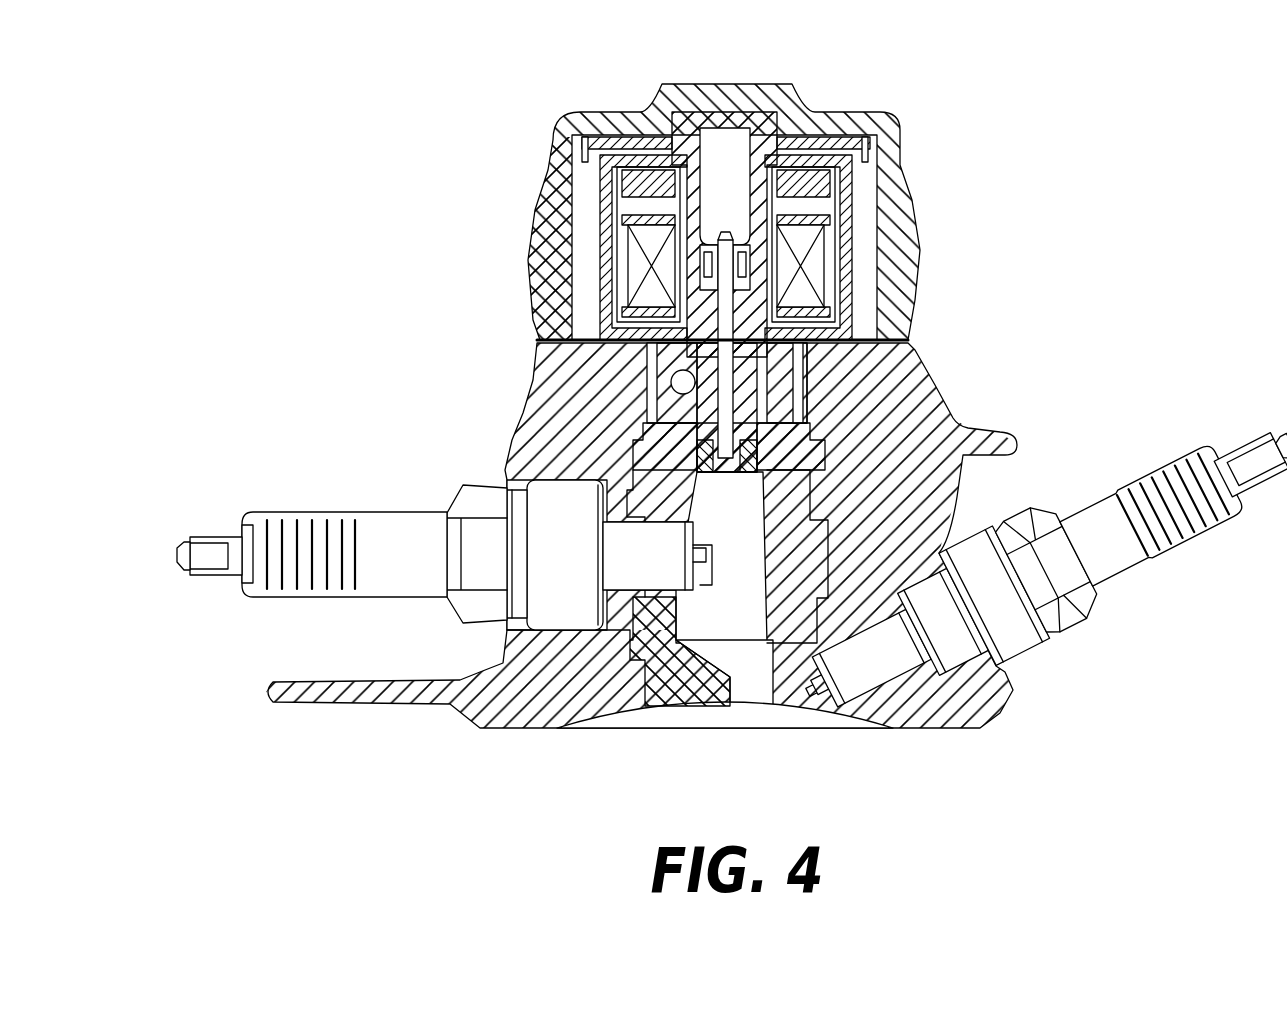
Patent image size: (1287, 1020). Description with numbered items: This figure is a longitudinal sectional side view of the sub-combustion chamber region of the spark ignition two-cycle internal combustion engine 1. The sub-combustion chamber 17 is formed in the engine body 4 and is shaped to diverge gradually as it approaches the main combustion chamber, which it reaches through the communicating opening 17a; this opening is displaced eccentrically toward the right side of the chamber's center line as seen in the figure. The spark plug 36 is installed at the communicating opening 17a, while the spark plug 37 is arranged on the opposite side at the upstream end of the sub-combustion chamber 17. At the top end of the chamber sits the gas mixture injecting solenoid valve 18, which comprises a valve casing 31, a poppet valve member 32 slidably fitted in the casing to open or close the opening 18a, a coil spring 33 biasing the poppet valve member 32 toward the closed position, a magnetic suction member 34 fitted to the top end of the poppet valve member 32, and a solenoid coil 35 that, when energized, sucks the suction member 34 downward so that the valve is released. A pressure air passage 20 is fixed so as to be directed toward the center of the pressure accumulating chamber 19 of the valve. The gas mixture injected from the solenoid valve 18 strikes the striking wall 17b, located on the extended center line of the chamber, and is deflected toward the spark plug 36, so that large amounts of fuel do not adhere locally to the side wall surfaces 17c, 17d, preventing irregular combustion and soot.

The internal combustion engine 1 is at (408, 291).
The cylinder head 4 is at (878, 418).
The sub-combustion chamber 17 is at (700, 628).
The communicating opening 17a is at (775, 682).
The striking wall 17b is at (670, 680).
The side wall surface 17c is at (624, 636).
The side wall surface 17d is at (724, 672).
The gas mixture injecting solenoid valve 18 is at (736, 294).
The opening 18a is at (753, 474).
The pressure accumulating chamber 19 is at (772, 318).
The pressure air passage 20 is at (680, 382).
The valve casing 31 is at (788, 381).
The poppet valve member 32 is at (697, 462).
The coil spring 33 is at (748, 267).
The magnetic suction member 34 is at (725, 209).
The solenoid coil 35 is at (772, 247).
The spark plug 36 is at (1040, 551).
The spark plug 37 is at (395, 520).